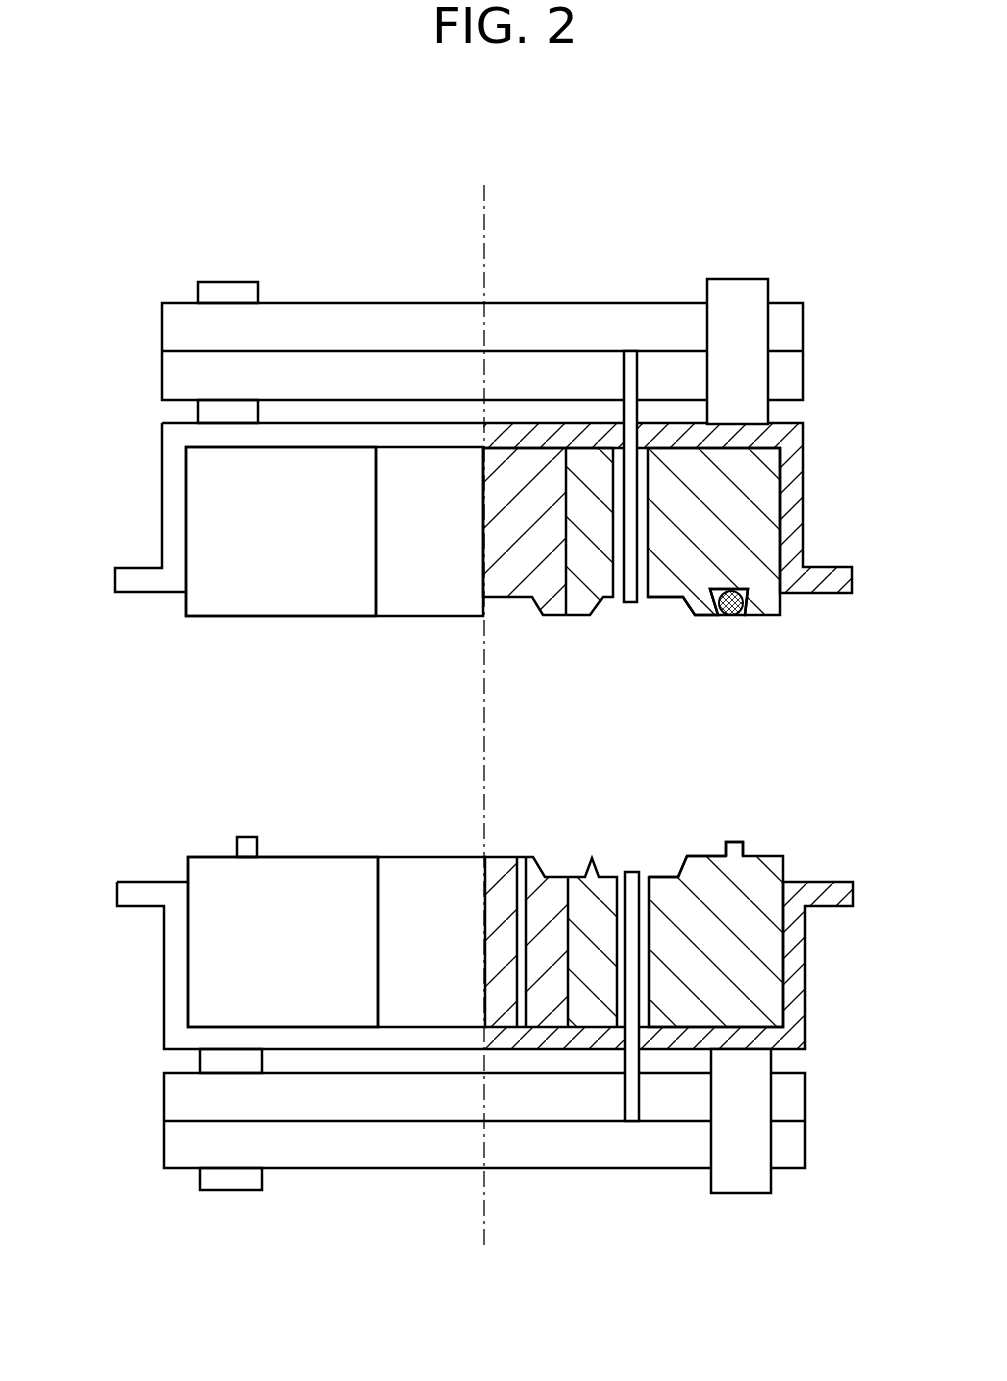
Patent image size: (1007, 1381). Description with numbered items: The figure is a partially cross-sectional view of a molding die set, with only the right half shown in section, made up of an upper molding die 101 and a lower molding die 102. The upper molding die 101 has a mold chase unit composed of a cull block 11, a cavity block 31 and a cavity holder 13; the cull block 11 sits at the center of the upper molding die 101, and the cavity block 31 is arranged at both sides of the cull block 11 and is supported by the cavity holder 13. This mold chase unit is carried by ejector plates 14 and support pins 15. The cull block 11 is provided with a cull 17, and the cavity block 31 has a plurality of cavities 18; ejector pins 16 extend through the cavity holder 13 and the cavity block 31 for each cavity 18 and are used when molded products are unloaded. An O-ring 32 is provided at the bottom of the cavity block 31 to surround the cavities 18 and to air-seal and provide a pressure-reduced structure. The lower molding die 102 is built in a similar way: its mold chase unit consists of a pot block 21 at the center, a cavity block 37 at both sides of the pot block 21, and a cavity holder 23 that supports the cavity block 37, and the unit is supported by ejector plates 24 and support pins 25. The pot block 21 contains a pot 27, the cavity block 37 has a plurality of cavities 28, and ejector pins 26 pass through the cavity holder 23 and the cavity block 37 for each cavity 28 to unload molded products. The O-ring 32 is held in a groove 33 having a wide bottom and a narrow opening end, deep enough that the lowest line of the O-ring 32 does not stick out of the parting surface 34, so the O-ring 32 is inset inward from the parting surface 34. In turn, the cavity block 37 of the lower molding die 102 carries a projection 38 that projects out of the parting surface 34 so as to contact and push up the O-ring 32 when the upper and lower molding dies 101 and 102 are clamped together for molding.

The upper molding die 101 is at (124, 484).
The lower molding die 102 is at (118, 968).
The cull block 11 is at (412, 596).
The cavity holder 13 is at (789, 553).
The ejector plates 14 is at (795, 373).
The support pins 15 is at (748, 280).
The ejector pins 16 is at (607, 386).
The cull 17 is at (508, 601).
The cavities 18 is at (646, 601).
The pot block 21 is at (408, 873).
The cavity holder 23 is at (798, 988).
The ejector plates 24 is at (795, 1145).
The support pins 25 is at (724, 1183).
The ejector pins 26 is at (632, 871).
The pot 27 is at (522, 860).
The cavities 28 is at (668, 866).
The cavity block 31 is at (752, 477).
The O-ring 32 is at (729, 617).
The groove 33 is at (712, 588).
The parting surface 34 is at (288, 620).
The cavity block 37 is at (776, 868).
The projection 38 is at (741, 842).